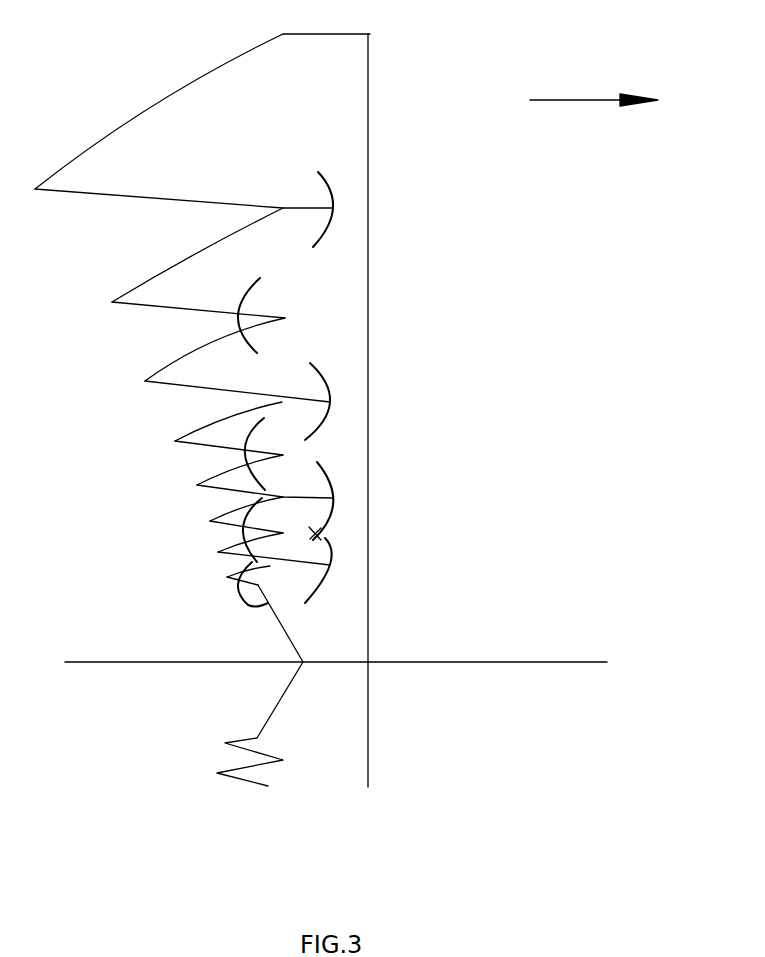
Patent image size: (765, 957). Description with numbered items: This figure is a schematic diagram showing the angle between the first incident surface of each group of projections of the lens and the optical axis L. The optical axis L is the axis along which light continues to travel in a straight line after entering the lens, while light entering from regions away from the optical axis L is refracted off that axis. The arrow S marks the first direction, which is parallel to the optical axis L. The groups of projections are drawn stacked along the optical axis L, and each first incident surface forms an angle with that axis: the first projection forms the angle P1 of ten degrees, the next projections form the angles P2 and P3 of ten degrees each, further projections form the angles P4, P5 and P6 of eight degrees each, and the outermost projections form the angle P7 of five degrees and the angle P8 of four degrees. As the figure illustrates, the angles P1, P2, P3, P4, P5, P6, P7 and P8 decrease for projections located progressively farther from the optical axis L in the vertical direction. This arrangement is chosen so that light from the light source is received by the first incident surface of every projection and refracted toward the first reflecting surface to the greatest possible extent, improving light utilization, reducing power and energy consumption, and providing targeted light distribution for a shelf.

The angle P1 is at (162, 610).
The angle P2 is at (362, 540).
The angle P3 is at (166, 533).
The angle P4 is at (353, 464).
The angle P5 is at (165, 446).
The angle P6 is at (330, 365).
The angle P7 is at (166, 292).
The angle P8 is at (272, 140).
The first direction S is at (594, 73).
The optical axis L is at (349, 625).